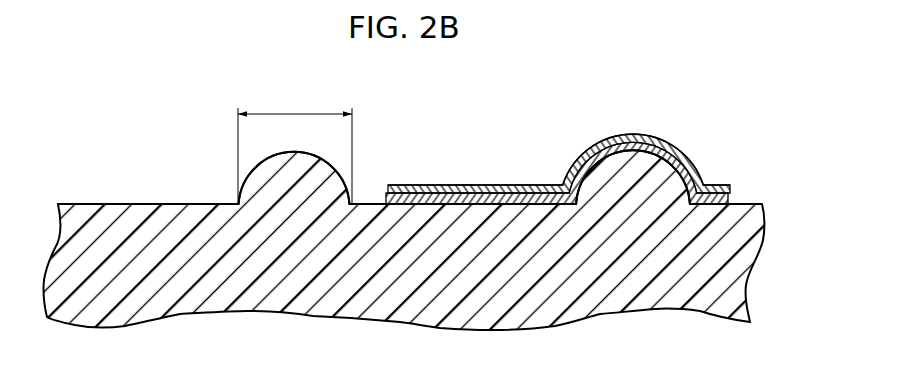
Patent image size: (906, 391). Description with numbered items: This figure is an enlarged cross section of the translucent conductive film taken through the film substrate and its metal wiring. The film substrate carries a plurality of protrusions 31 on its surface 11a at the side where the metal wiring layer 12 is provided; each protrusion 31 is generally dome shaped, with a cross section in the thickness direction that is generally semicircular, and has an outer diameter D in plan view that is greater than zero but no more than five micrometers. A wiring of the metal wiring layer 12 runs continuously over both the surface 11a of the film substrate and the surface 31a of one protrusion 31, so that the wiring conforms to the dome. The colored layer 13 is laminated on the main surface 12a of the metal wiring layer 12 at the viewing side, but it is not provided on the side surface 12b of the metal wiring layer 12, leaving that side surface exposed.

The surface of the film substrate 11a is at (113, 203).
The protrusion 31 is at (270, 188).
The surface of the protrusion 31a is at (256, 167).
The metal wiring layer 12 is at (559, 152).
The main surface of the metal wiring layer 12a is at (462, 196).
The side surface of the metal wiring layer 12b is at (386, 188).
The colored layer 13 is at (510, 186).
The outer diameter of the protrusion D is at (292, 110).